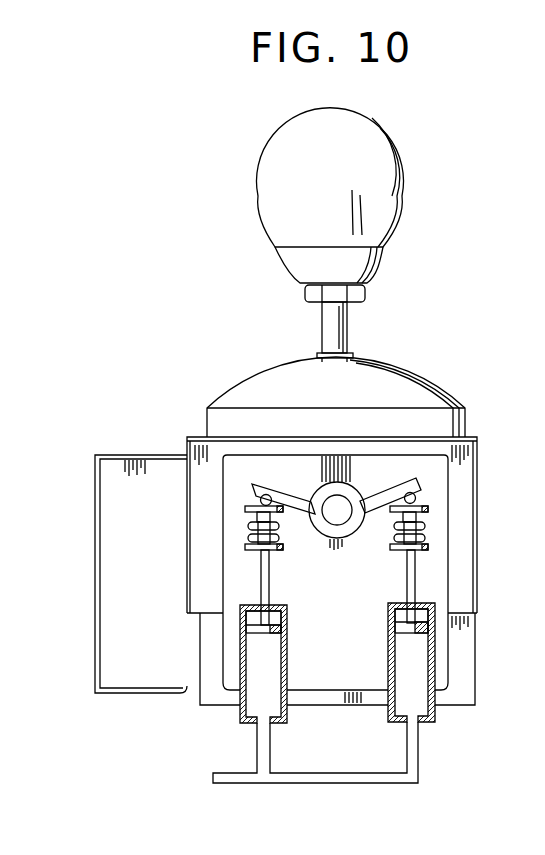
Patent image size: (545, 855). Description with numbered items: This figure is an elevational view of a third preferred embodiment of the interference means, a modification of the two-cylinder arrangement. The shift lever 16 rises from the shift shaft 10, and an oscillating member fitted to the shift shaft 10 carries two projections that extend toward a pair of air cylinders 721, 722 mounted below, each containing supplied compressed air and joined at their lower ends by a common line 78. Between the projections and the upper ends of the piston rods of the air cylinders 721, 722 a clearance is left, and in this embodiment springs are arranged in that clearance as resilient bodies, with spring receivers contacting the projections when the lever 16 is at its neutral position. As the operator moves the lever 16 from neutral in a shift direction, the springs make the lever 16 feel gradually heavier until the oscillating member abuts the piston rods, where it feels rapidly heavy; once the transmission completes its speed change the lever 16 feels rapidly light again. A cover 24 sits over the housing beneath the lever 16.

The lever 16 is at (348, 328).
The cover dome 24 is at (406, 372).
The shift shaft 10 is at (341, 504).
The air cylinder 721 is at (287, 722).
The air cylinder 722 is at (434, 722).
The hydraulic conduit 78 is at (214, 774).